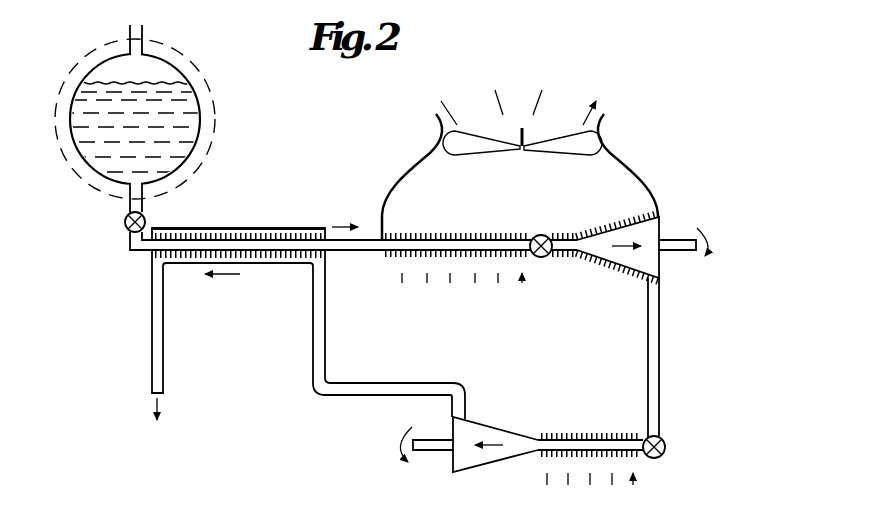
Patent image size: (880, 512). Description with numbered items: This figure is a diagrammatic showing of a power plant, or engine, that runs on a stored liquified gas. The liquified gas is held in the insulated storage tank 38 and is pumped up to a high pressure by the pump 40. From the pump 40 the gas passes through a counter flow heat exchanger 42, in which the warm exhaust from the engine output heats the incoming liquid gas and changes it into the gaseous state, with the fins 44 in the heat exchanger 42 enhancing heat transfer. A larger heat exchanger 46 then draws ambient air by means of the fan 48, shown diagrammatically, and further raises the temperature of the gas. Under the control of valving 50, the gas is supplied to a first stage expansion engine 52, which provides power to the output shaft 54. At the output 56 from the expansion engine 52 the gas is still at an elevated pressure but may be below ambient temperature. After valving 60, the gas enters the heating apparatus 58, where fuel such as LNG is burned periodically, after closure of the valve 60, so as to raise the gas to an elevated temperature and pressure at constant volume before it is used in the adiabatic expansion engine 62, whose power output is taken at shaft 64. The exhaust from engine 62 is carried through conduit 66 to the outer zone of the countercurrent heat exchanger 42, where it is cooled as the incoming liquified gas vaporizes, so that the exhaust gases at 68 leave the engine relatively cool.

The insulated storage tank 38 is at (75, 168).
The pump 40 is at (123, 227).
The counter flow heat exchanger 42 is at (287, 227).
The fins 44 is at (275, 264).
The larger heat exchanger 46 is at (405, 188).
The fan 48 is at (588, 142).
The valving 50 is at (545, 257).
The expansion engine 52 is at (653, 228).
The output shaft 54 is at (678, 252).
The output 56 is at (658, 353).
The heating apparatus 58 is at (588, 432).
The valving 60 is at (665, 453).
The adiabatic expansion engine 62 is at (485, 423).
The shaft 64 is at (435, 452).
The conduit 66 is at (312, 368).
The exhaust gases 68 is at (152, 345).